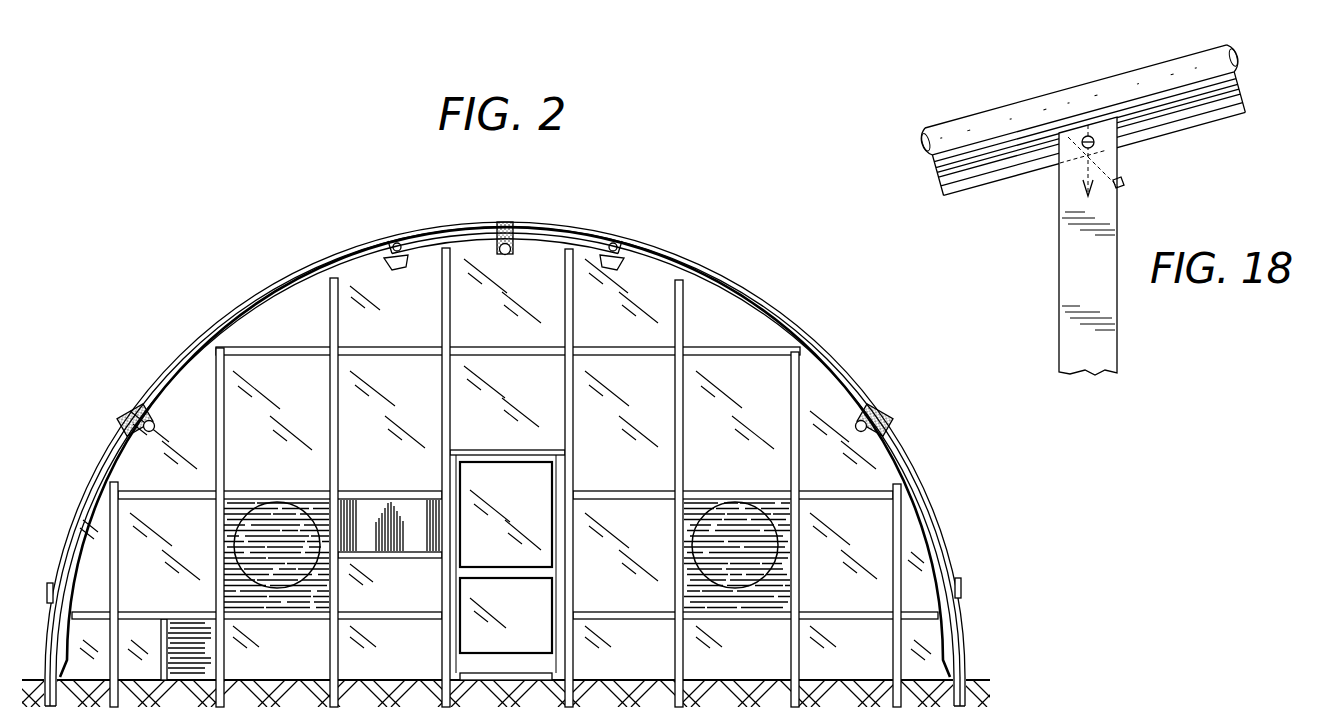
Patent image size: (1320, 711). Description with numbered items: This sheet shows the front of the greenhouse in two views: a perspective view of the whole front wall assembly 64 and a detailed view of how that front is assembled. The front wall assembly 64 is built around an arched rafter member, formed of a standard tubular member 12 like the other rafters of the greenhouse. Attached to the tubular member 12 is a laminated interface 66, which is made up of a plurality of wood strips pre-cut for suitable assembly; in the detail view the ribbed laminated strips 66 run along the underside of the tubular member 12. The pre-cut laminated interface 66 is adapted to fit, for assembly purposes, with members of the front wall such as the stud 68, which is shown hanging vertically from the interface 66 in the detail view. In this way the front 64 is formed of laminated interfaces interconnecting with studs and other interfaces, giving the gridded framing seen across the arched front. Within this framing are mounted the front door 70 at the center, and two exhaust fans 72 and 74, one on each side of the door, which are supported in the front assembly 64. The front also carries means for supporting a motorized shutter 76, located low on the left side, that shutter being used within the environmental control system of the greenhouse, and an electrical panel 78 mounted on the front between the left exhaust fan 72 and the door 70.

In FIG. 2, the front wall assembly 64 is at (233, 307).
In FIG. 2, the front door 70 is at (534, 632).
In FIG. 2, the exhaust fan 72 is at (279, 512).
In FIG. 2, the exhaust fan 74 is at (742, 516).
In FIG. 2, the motorized shutter 76 is at (205, 658).
In FIG. 2, the electrical panel 78 is at (405, 508).
In FIG. 18, the tubular member 12 is at (1029, 101).
In FIG. 18, the laminated interface 66 is at (1166, 124).
In FIG. 18, the stud 68 is at (1068, 283).